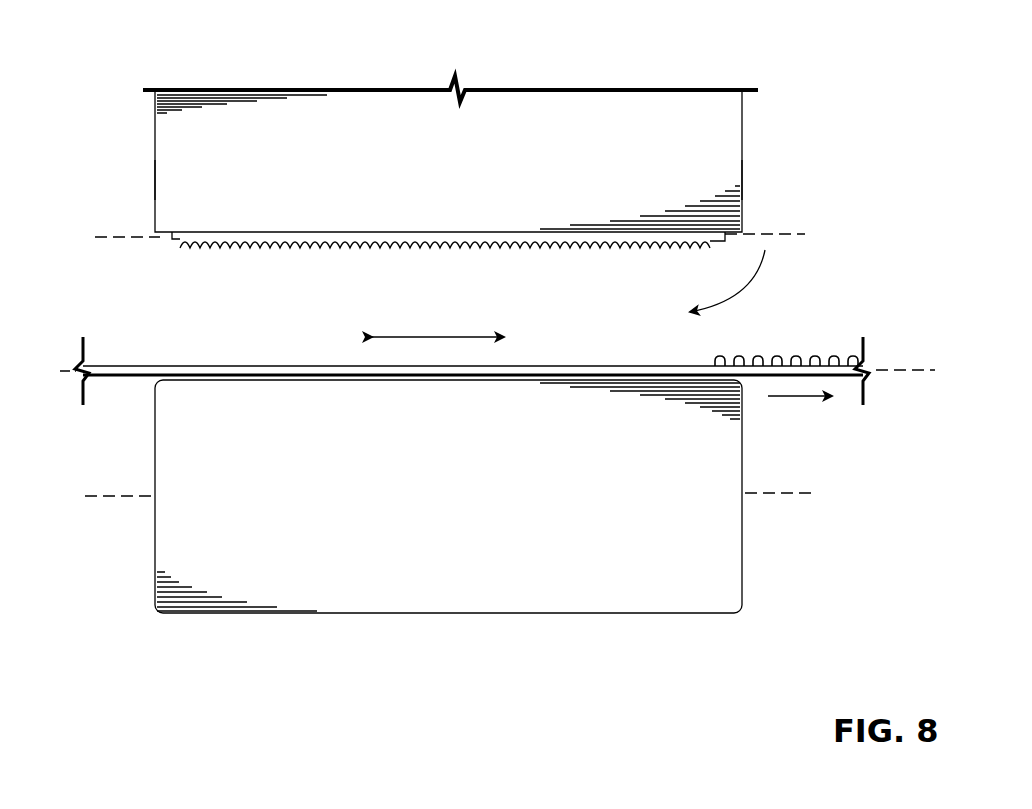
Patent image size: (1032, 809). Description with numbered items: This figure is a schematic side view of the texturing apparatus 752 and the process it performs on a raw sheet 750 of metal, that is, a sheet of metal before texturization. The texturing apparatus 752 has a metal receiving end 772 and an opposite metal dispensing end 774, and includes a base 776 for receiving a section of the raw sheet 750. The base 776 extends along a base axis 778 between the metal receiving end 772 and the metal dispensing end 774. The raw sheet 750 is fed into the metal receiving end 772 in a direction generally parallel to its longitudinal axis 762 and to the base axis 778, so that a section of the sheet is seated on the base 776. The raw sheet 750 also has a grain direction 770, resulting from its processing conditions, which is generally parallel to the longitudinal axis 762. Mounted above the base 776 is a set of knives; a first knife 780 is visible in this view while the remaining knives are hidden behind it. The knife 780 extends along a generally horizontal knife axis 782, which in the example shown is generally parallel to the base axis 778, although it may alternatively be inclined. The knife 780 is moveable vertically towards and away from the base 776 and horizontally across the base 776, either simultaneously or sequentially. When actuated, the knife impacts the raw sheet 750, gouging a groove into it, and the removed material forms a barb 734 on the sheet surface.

The texturing apparatus 752 is at (703, 113).
The metal receiving end 772 is at (160, 178).
The metal dispensing end 774 is at (738, 178).
The knife axis 782 is at (135, 235).
The knife 780 is at (172, 240).
The grain direction 770 is at (440, 335).
The raw sheet of metal 750 is at (132, 378).
The barb 734 is at (750, 357).
The longitudinal axis 762 is at (908, 368).
The base axis 778 is at (130, 498).
The base 776 is at (478, 505).